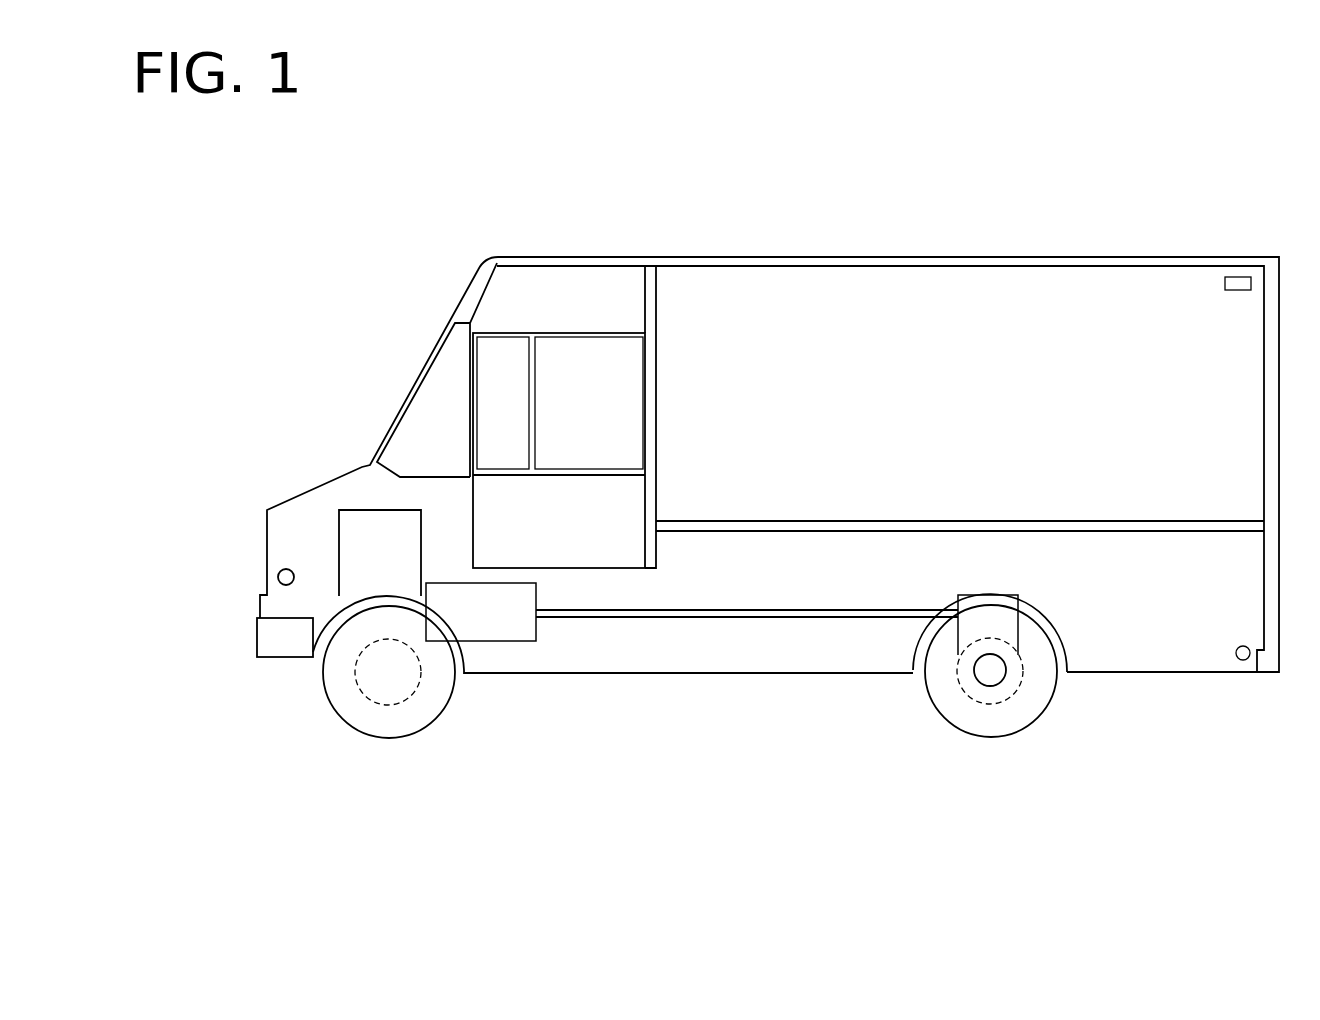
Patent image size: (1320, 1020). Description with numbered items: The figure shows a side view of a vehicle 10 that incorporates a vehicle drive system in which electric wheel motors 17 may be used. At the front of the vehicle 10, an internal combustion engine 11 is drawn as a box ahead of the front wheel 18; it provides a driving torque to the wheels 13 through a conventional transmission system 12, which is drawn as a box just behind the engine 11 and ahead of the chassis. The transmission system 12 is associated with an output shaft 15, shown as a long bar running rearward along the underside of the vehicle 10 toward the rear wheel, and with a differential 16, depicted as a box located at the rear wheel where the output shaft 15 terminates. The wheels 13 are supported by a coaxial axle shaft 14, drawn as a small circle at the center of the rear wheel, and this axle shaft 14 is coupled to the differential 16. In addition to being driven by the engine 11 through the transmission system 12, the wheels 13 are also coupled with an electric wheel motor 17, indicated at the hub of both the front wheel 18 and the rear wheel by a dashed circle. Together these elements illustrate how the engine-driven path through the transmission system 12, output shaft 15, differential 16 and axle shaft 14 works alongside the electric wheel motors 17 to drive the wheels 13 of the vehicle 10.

The vehicle 10 is at (875, 283).
The internal combustion engine 11 is at (358, 525).
The transmission system 12 is at (507, 627).
The wheels 13 is at (998, 717).
The coaxial axle shaft 14 is at (990, 672).
The output shaft 15 is at (673, 613).
The differential 16 is at (1010, 602).
The electric wheel motor 17 is at (395, 688).
The front wheel 18 is at (343, 702).